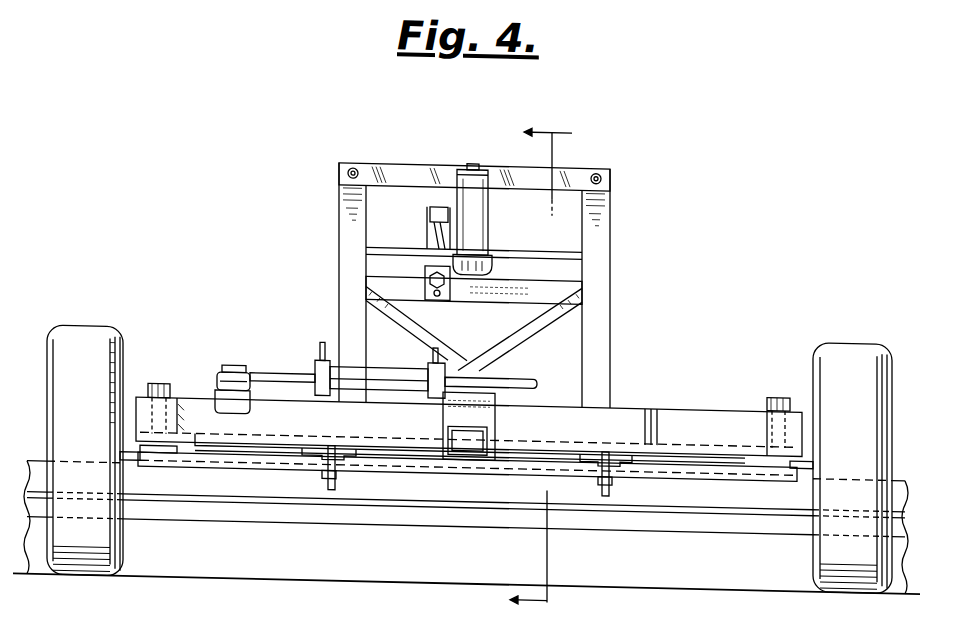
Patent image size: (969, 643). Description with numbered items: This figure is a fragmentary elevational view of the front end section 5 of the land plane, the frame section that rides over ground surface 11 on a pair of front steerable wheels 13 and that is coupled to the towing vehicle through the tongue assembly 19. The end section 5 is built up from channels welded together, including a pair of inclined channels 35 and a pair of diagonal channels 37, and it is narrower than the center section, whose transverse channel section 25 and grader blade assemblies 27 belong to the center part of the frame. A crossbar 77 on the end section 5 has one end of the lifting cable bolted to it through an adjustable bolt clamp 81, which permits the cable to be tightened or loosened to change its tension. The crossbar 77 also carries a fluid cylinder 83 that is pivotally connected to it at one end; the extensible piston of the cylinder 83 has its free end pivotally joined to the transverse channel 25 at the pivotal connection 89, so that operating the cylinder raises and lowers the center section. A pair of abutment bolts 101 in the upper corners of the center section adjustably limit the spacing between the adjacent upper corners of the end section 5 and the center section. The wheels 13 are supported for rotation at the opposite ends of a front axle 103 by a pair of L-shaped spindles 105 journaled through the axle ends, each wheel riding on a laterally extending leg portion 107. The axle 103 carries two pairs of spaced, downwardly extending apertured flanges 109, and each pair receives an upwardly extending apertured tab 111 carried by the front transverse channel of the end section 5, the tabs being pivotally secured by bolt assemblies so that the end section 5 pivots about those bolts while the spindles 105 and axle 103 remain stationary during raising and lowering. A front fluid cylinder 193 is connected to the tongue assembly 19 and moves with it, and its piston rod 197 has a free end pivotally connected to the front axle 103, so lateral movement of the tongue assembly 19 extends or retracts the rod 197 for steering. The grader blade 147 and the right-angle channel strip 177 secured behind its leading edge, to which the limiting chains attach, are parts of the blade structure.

The ground surface 11 is at (256, 569).
The front steerable wheels 13 is at (100, 323).
The tongue assembly 19 is at (469, 439).
The transverse channel section 25 is at (427, 153).
The grader blade assembly 27 is at (36, 448).
The inclined channel 35 is at (350, 254).
The diagonal channel 37 is at (503, 340).
The crossbar 77 is at (520, 253).
The adjustable bolt clamp 81 is at (430, 206).
The fluid cylinder 83 is at (478, 194).
The pivotal connection 89 is at (477, 154).
The abutment bolt 101 is at (358, 157).
The front axle 103 is at (675, 385).
The spindle 105 is at (158, 378).
The leg portion 107 is at (130, 442).
The apertured flange 109 is at (340, 469).
The apertured tab 111 is at (325, 471).
The grader blade 147 is at (442, 482).
The channel strip 177 is at (362, 499).
The front fluid cylinder 193 is at (338, 354).
The piston rod 197 is at (278, 359).
The front end section 5 is at (553, 374).